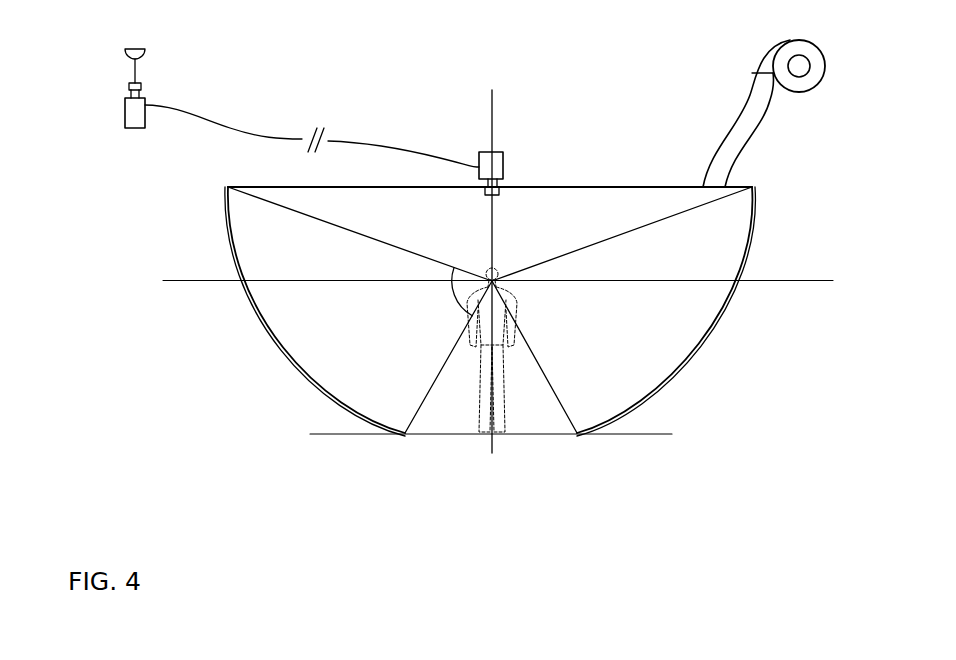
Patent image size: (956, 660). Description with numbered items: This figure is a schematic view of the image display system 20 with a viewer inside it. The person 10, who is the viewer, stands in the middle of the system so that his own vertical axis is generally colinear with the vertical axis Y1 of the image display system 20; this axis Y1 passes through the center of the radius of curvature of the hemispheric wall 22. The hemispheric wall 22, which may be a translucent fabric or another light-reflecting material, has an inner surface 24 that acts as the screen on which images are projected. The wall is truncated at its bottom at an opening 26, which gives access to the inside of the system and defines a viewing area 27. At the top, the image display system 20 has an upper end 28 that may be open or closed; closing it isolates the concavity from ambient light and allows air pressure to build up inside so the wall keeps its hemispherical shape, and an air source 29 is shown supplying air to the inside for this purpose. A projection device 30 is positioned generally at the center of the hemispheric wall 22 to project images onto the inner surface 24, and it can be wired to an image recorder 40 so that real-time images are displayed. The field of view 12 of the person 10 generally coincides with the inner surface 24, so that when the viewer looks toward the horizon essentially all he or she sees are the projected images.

The person 10 is at (498, 435).
The field of view 12 is at (455, 297).
The image display system 20 is at (748, 181).
The hemispheric wall 22 is at (325, 393).
The inner surface 24 is at (250, 289).
The opening 26 is at (408, 434).
The viewing area 27 is at (555, 424).
The upper end 28 is at (460, 181).
The air source 29 is at (752, 73).
The projection device 30 is at (503, 170).
The image recorder 40 is at (122, 118).
The vertical axis Y1 is at (493, 143).